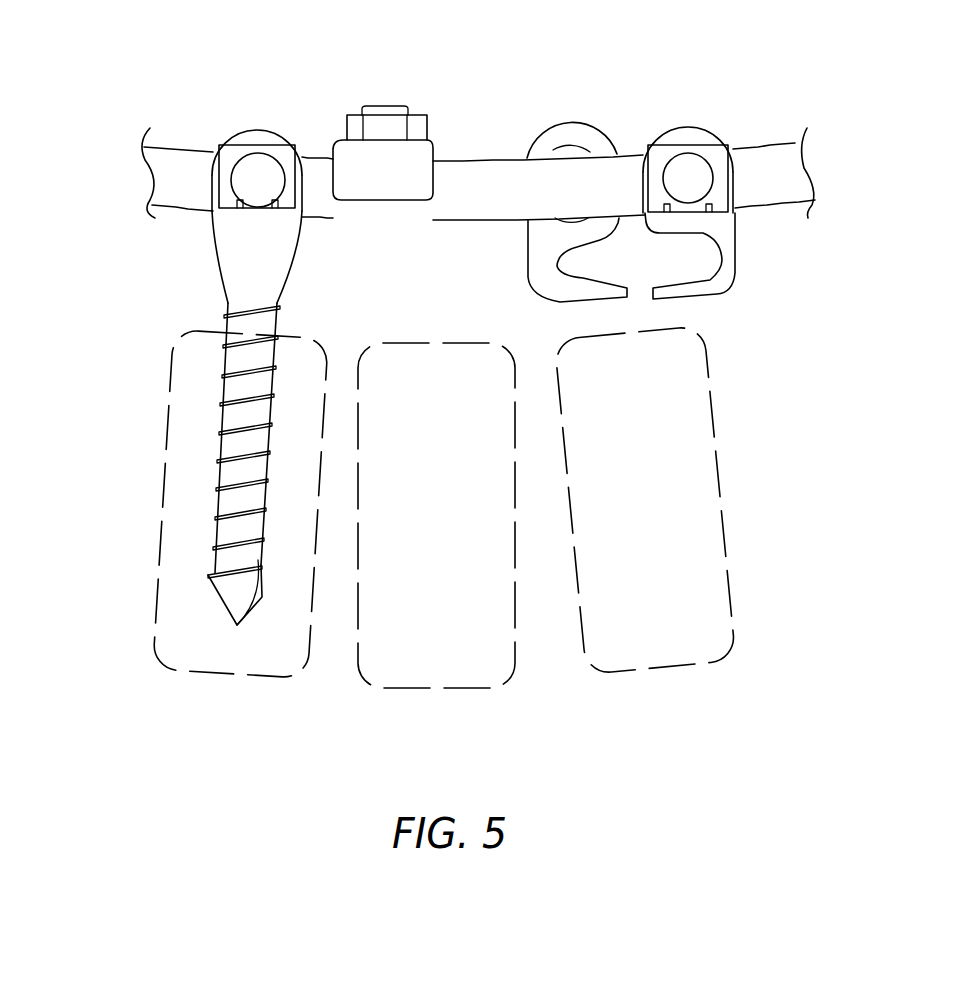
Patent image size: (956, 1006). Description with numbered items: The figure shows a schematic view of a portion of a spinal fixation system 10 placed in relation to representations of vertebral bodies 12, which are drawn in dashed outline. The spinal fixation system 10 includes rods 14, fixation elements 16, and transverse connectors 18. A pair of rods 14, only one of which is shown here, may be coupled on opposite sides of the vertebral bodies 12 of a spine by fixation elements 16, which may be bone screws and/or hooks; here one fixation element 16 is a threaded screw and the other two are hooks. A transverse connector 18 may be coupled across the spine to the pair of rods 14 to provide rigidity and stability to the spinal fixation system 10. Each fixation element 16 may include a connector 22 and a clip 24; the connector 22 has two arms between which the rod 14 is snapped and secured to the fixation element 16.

The spinal fixation system 10 is at (173, 78).
The vertebral bodies 12 is at (170, 480).
The rod 14 is at (537, 203).
The fixation element 16 is at (230, 243).
The transverse connector 18 is at (378, 187).
The connector 22 is at (687, 175).
The clip 24 is at (287, 155).